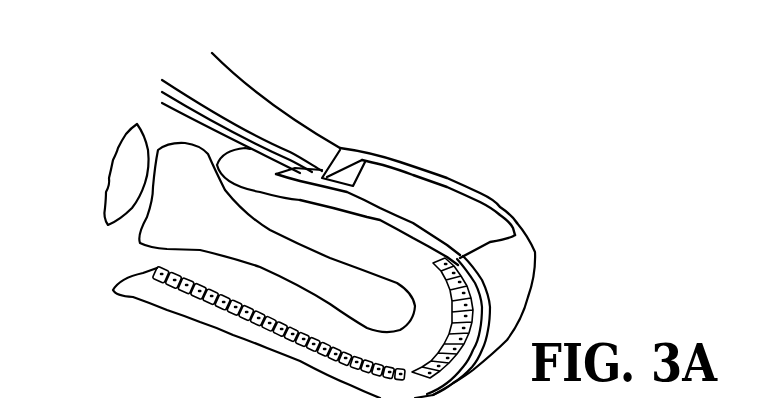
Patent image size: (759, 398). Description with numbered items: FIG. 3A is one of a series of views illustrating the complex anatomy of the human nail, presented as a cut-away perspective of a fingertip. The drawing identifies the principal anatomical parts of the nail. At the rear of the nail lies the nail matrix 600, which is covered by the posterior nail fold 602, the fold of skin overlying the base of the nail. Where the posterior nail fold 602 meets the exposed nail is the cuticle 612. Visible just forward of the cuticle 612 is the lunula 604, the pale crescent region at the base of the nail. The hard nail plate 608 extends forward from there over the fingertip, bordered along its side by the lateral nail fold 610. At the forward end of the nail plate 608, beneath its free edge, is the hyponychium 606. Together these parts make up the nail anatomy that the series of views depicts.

The nail matrix 600 is at (243, 172).
The posterior nail fold 602 is at (312, 150).
The cuticle 612 is at (340, 150).
The lunula 604 is at (380, 168).
The lateral nail fold 610 is at (465, 187).
The nail plate 608 is at (472, 223).
The hyponychium 606 is at (460, 258).